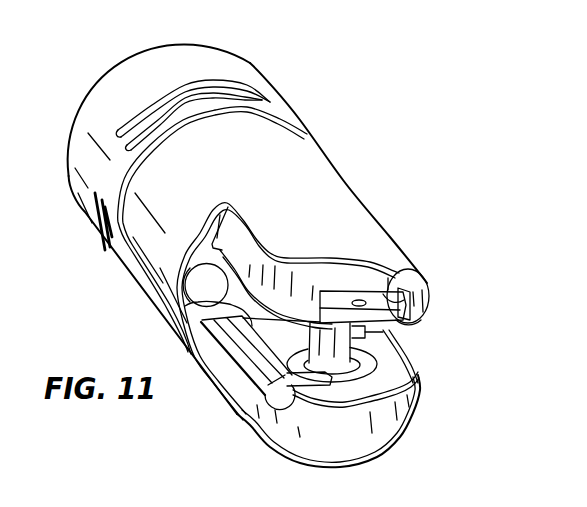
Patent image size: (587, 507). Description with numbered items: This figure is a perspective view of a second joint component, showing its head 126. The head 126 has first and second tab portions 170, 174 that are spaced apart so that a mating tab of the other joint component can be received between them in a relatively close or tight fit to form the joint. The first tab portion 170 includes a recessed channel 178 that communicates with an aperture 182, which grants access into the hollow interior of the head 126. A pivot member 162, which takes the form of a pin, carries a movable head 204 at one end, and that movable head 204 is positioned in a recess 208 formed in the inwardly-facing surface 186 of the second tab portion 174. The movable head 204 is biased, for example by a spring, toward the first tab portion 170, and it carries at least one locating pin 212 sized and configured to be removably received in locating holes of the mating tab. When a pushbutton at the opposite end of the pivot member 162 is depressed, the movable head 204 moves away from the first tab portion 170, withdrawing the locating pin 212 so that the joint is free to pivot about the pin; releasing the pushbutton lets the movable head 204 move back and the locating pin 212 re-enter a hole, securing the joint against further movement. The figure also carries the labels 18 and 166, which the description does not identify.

The housing 18 is at (305, 410).
The head 126 is at (257, 67).
The pivot member 162 is at (418, 392).
The cutaway edge of housing wall 166 is at (140, 290).
The first tab portion 170 is at (317, 435).
The second tab portion 174 is at (425, 277).
The recessed channel 178 is at (266, 410).
The aperture 182 is at (185, 306).
The inwardly-facing surface 186 is at (414, 320).
The movable head 204 is at (340, 311).
The recess 208 is at (414, 282).
The locating pin 212 is at (400, 352).